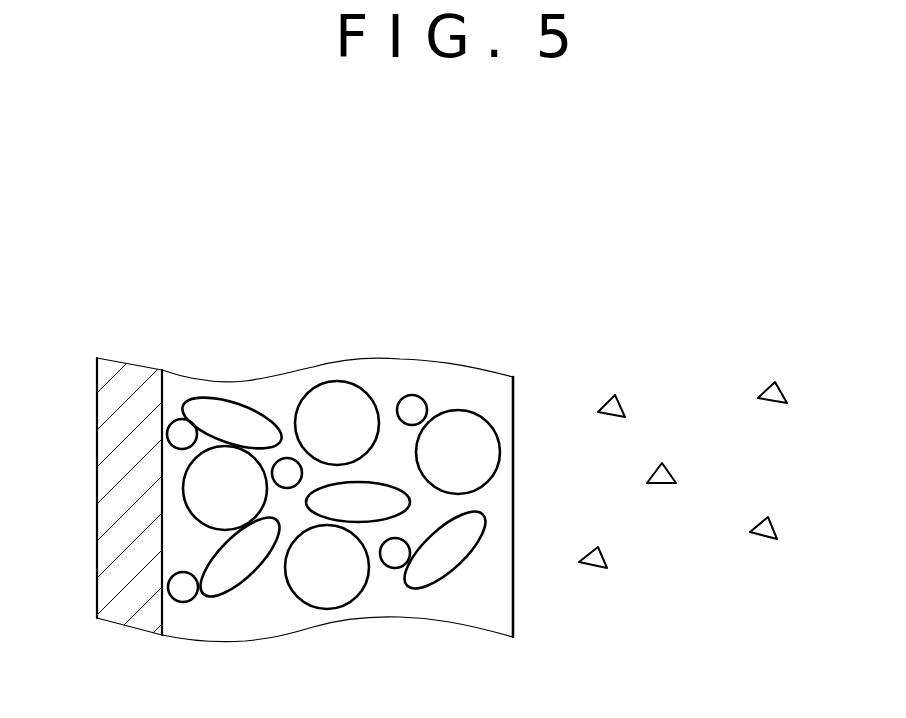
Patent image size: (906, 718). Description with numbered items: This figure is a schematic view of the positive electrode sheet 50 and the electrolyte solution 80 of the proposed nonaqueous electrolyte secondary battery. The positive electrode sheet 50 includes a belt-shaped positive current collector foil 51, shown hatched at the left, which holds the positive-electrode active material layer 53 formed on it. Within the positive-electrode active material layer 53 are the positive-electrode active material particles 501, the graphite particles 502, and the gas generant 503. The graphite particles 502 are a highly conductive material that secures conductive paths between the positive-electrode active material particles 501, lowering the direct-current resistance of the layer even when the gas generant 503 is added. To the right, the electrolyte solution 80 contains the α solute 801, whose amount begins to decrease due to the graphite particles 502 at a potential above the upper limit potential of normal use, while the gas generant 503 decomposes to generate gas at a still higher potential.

The positive electrode sheet 50 is at (270, 306).
The positive current collector foil 51 is at (97, 392).
The positive-electrode active material layer 53 is at (493, 326).
The positive-electrode active material particles 501 is at (368, 392).
The graphite particles 502 is at (455, 573).
The gas generant 503 is at (423, 397).
The electrolyte solution 80 is at (683, 442).
The α solute 801 is at (607, 556).